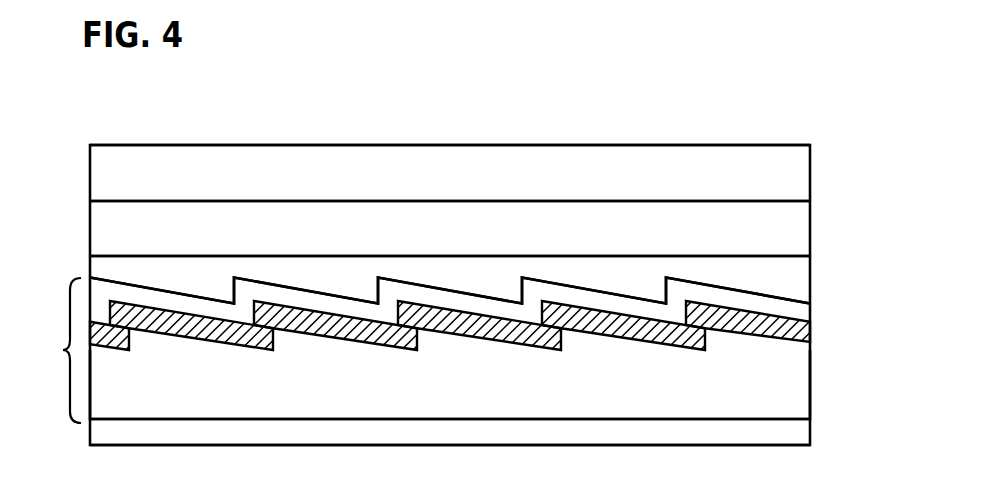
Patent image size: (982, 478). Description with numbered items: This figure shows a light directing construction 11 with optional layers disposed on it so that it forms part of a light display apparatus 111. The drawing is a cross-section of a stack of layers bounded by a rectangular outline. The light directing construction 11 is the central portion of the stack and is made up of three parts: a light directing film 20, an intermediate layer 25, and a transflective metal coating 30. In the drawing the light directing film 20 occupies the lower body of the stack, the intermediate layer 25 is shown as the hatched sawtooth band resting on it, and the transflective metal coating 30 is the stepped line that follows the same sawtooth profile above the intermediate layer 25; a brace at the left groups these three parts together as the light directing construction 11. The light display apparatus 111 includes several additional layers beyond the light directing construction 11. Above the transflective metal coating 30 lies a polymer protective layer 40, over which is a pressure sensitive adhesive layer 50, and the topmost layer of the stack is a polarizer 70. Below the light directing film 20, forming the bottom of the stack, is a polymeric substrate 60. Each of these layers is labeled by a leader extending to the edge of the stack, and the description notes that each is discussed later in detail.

The light display apparatus 111 is at (612, 116).
The polarizer 70 is at (90, 178).
The pressure sensitive adhesive layer 50 is at (810, 222).
The polymer protective layer 40 is at (90, 264).
The transflective metal coating 30 is at (810, 309).
The intermediate layer 25 is at (810, 330).
The light directing film 20 is at (810, 370).
The polymeric substrate 60 is at (90, 433).
The light directing construction 11 is at (55, 350).